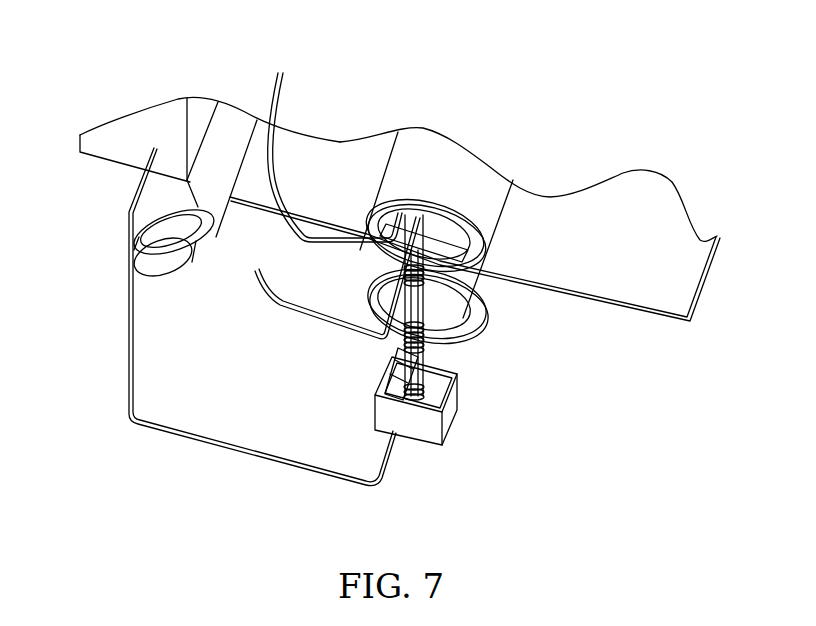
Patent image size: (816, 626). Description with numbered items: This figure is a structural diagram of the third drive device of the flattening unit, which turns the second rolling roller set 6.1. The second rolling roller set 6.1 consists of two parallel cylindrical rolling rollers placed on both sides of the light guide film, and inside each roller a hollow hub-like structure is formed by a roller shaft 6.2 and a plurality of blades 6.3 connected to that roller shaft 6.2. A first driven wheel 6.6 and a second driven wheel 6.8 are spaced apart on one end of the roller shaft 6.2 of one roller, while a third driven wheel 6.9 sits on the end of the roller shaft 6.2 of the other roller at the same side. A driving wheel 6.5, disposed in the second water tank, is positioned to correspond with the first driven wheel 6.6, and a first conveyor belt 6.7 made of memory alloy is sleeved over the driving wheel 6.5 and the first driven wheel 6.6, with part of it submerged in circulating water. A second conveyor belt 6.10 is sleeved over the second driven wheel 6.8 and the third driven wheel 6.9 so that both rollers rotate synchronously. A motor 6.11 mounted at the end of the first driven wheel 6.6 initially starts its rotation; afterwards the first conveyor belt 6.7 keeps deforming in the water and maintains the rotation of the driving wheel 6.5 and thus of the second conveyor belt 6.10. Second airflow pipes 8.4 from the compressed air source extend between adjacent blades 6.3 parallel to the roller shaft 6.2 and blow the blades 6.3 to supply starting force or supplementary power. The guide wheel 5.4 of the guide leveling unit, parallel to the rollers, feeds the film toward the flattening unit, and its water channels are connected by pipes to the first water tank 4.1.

The first water tank 4.1 is at (128, 145).
The guide wheel 5.4 is at (187, 180).
The second airflow pipe 8.4 is at (290, 300).
The second rolling roller set 6.1 is at (492, 195).
The roller shaft 6.2 is at (425, 250).
The blades 6.3 is at (455, 233).
The driving wheel 6.5 is at (457, 391).
The first driven wheel 6.6 is at (440, 318).
The first conveyor belt 6.7 is at (427, 376).
The second driven wheel 6.8 is at (430, 333).
The third driven wheel 6.9 is at (425, 268).
The second conveyor belt 6.10 is at (450, 296).
The motor 6.11 is at (390, 362).